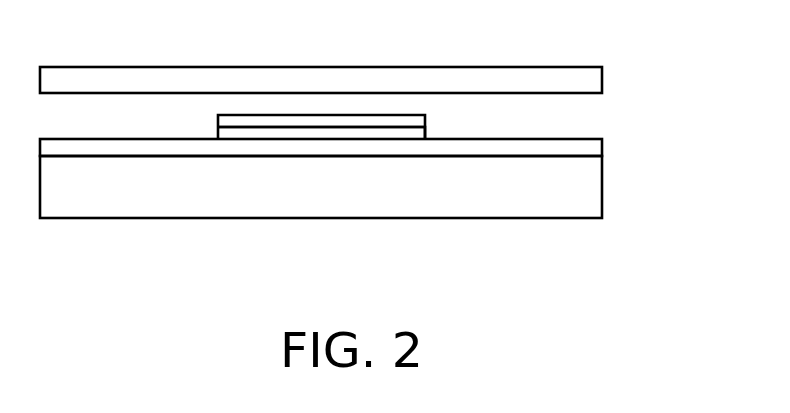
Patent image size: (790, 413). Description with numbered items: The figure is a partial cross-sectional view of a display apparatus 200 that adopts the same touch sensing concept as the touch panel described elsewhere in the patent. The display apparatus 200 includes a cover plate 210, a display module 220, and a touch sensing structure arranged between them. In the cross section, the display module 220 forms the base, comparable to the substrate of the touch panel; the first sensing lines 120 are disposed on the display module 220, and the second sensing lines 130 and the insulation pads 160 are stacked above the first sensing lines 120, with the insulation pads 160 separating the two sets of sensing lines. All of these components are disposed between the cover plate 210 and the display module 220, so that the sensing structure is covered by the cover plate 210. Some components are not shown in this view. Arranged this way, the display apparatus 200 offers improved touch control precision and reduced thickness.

The cover plate 210 is at (593, 83).
The first sensing lines 120 is at (593, 149).
The display module 220 is at (593, 203).
The second sensing lines 130 is at (280, 122).
The insulation pads 160 is at (366, 135).
The display apparatus 200 is at (602, 272).